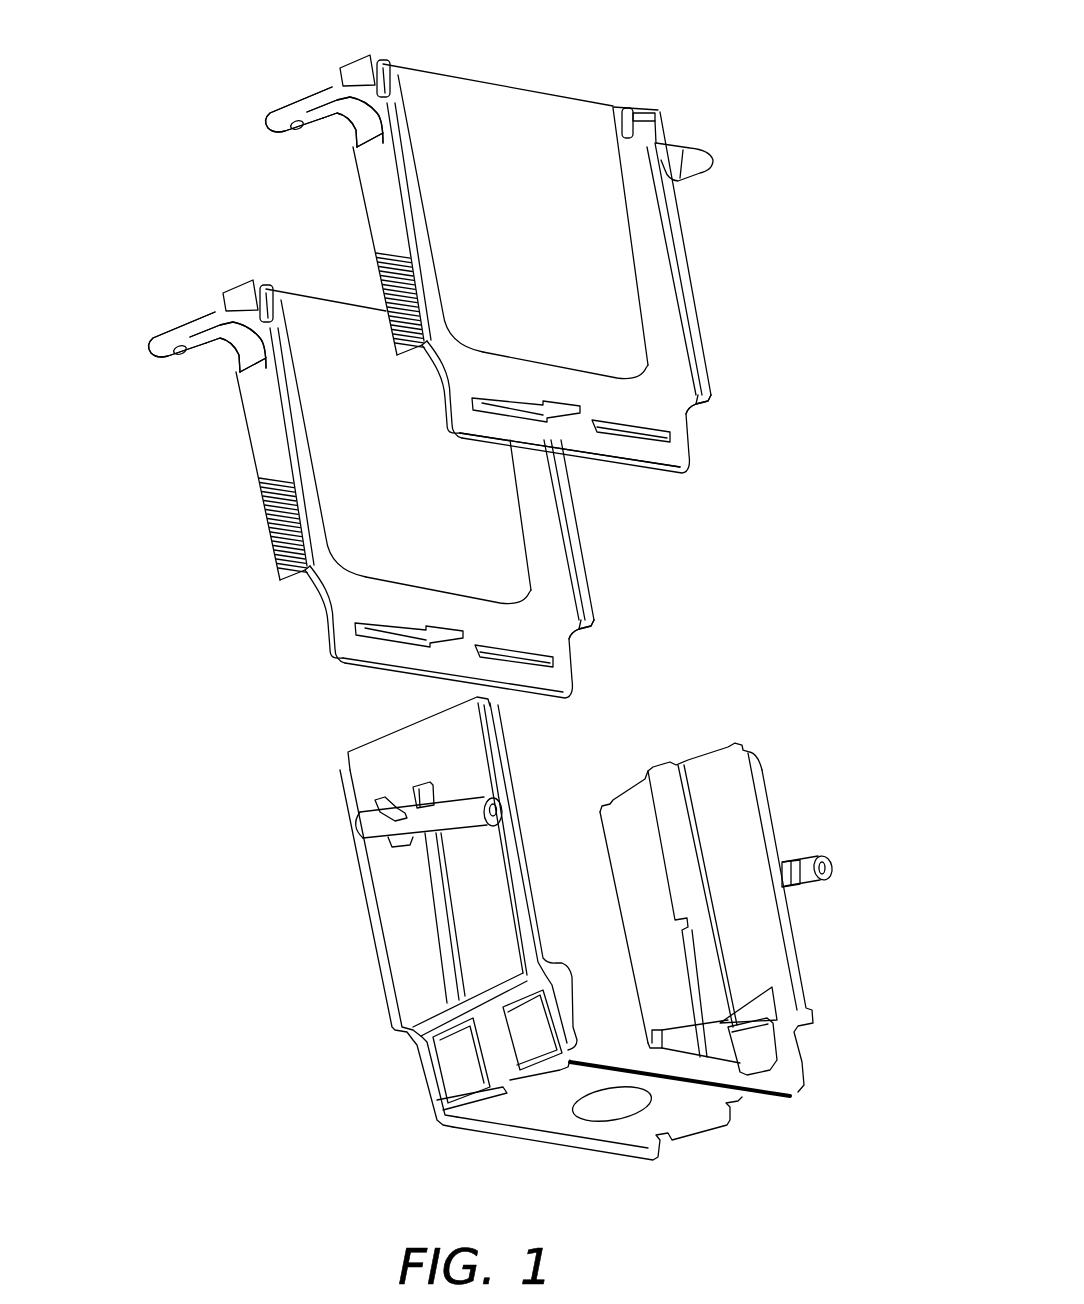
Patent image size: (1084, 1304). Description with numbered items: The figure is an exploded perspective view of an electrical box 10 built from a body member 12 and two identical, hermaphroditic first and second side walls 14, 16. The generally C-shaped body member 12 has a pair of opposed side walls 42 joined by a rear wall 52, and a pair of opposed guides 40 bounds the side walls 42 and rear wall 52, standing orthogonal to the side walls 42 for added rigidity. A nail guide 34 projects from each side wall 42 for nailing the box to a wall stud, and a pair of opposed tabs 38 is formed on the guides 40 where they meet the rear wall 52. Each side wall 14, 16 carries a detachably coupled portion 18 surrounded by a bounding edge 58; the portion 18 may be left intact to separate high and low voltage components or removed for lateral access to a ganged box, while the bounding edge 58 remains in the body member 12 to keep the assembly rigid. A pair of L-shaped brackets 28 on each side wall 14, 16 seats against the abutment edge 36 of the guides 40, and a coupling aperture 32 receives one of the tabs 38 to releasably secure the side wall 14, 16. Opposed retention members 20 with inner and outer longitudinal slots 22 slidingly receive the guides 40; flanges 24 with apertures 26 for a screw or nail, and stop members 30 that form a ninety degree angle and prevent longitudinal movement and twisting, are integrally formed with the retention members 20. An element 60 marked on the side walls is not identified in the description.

The electrical box 10 is at (150, 172).
The body member 12 is at (340, 975).
The first side wall 14 is at (222, 473).
The second side wall 16 is at (577, 77).
The detachably coupled portion 18 is at (513, 237).
The retention member 20 is at (322, 60).
The longitudinal slot 22 is at (703, 398).
The flange 24 is at (278, 110).
The aperture 26 is at (297, 131).
The bracket 28 is at (517, 400).
The stop member 30 is at (380, 63).
The coupling aperture 32 is at (571, 412).
The nail guide 34 is at (363, 820).
The abutment edge 36 is at (776, 1072).
The tab 38 is at (650, 1040).
The guide 40 is at (520, 874).
The side wall 42 is at (378, 738).
The rear wall 52 is at (669, 1117).
The bounding edge 58 is at (450, 385).
The knurled surface 60 is at (386, 318).